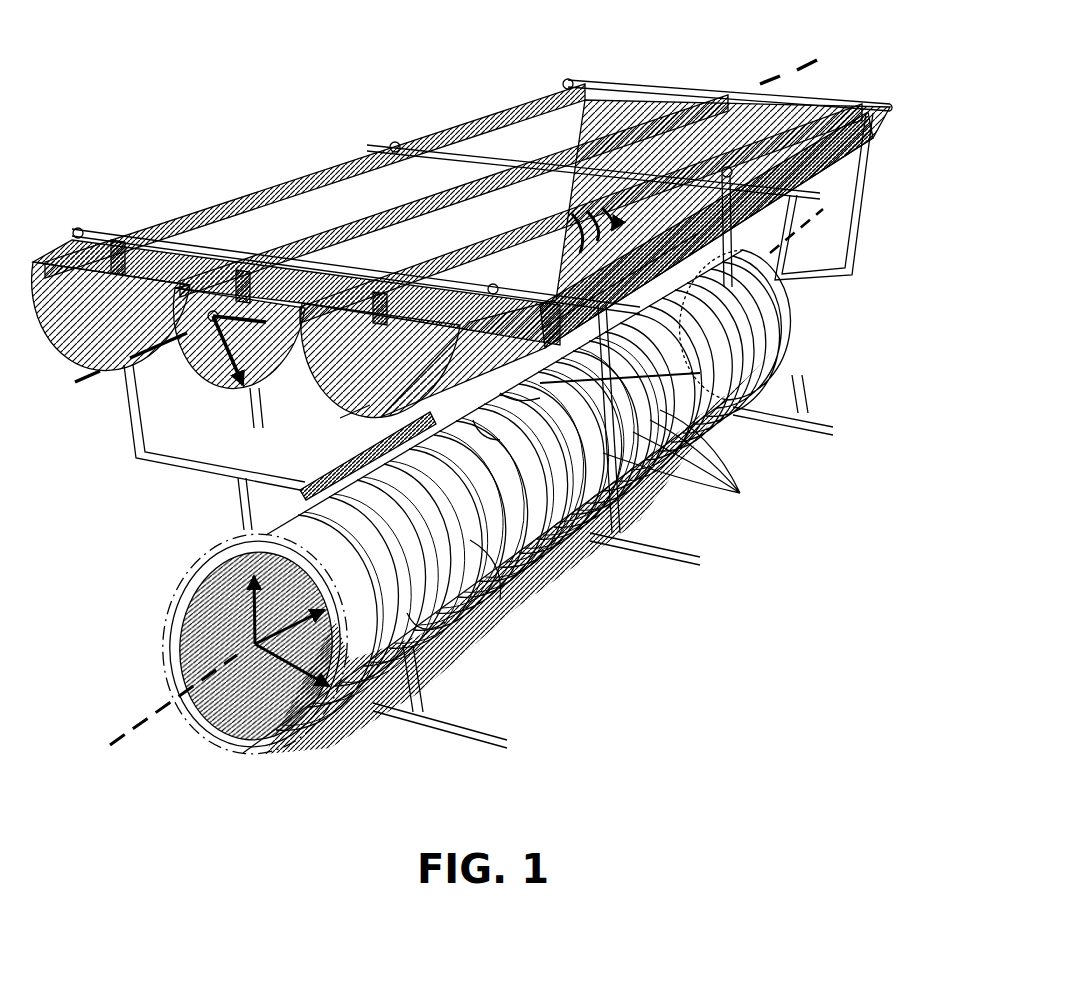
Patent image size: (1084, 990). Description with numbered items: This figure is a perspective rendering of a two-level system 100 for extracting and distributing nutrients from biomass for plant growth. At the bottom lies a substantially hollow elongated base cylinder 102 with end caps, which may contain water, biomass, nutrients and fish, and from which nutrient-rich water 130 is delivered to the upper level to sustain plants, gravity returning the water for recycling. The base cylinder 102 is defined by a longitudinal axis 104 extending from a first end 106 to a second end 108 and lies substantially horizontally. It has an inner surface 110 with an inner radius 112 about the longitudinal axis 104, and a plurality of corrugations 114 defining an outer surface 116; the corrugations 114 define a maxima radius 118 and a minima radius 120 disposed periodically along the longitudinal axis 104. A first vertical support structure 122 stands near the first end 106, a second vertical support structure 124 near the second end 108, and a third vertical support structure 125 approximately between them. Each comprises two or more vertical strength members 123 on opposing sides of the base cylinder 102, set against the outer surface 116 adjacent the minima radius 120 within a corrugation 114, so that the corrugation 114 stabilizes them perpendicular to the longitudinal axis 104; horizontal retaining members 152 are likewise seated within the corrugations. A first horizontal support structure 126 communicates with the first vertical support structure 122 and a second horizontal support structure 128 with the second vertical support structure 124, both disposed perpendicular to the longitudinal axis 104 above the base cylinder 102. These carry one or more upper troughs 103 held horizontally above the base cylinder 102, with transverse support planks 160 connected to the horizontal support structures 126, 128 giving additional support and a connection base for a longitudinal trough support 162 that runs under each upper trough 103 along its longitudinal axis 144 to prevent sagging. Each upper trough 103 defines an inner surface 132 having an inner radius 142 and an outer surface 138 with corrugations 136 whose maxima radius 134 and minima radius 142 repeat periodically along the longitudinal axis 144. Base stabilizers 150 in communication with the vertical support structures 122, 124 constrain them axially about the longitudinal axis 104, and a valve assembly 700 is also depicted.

The two-level system 100 is at (458, 48).
The base cylinder 102 is at (550, 607).
The upper troughs 103 is at (461, 259).
The longitudinal axis 104 is at (113, 727).
The first end 106 is at (224, 757).
The second end 108 is at (814, 300).
The inner surface 110 is at (350, 486).
The inner radius 112 is at (226, 610).
The corrugations 114 is at (681, 466).
The outer surface 116 is at (221, 528).
The maxima radius 118 is at (289, 620).
The minima radius 120 is at (315, 676).
The first vertical support structure 122 is at (405, 683).
The vertical strength members 123 is at (500, 393).
The second vertical support structure 124 is at (767, 388).
The third vertical support structure 125 is at (625, 514).
The first horizontal support structure 126 is at (210, 383).
The second horizontal support structure 128 is at (823, 200).
The nutrient-rich water 130 is at (520, 250).
The inner surface 132 is at (499, 122).
The maxima radius 134 is at (220, 330).
The corrugations 136 is at (572, 230).
The outer surface 138 is at (341, 419).
The inner radius 142 is at (218, 318).
The longitudinal axis 144 is at (79, 387).
The base stabilizers 150 is at (638, 549).
The horizontal retaining members 152 is at (470, 540).
The transverse support planks 160 is at (473, 420).
The longitudinal trough support 162 is at (660, 304).
The valve assembly 700 is at (240, 266).